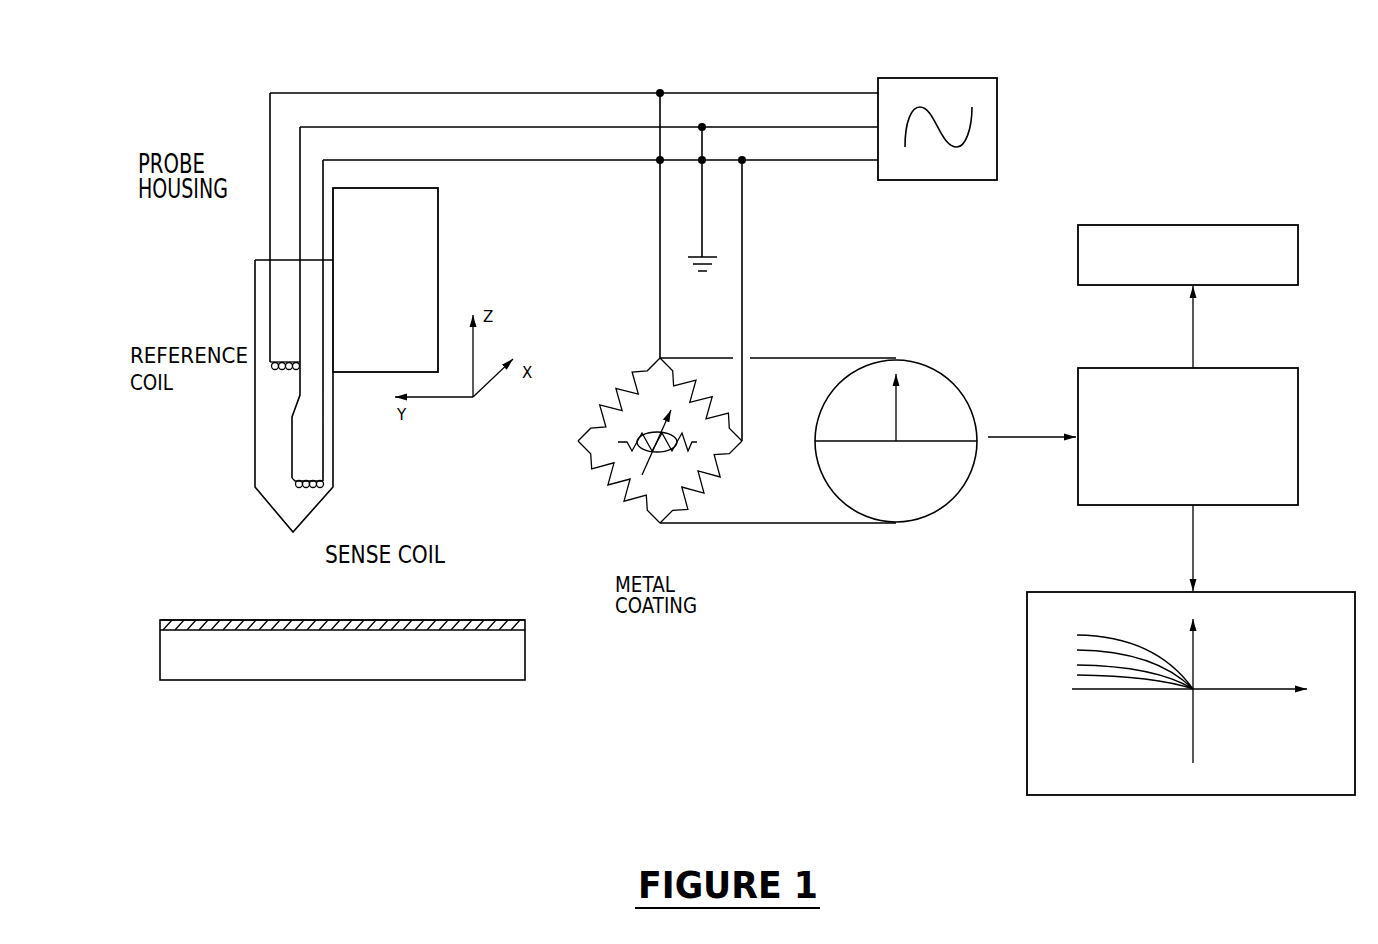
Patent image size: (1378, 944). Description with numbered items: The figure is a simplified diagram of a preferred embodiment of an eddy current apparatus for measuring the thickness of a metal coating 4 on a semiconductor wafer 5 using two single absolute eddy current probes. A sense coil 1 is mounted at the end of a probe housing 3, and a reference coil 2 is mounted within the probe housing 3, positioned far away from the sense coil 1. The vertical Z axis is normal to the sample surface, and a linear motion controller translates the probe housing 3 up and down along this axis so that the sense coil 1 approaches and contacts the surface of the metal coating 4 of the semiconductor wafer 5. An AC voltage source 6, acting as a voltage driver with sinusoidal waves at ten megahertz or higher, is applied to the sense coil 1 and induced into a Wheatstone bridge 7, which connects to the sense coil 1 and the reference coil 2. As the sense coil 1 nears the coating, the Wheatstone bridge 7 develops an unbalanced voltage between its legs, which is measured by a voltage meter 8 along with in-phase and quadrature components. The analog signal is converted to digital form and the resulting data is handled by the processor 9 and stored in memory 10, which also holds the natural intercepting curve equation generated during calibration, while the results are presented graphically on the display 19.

The sense coil 1 is at (308, 488).
The reference coil 2 is at (277, 373).
The probe housing 3 is at (253, 257).
The metal coating 4 is at (512, 617).
The semiconductor wafer 5 is at (352, 685).
The AC voltage source 6 is at (998, 132).
The Wheatstone bridge 7 is at (633, 440).
The voltage meter 8 is at (940, 367).
The processor 9 is at (1277, 510).
The memory 10 is at (1277, 287).
The display 19 is at (1025, 707).